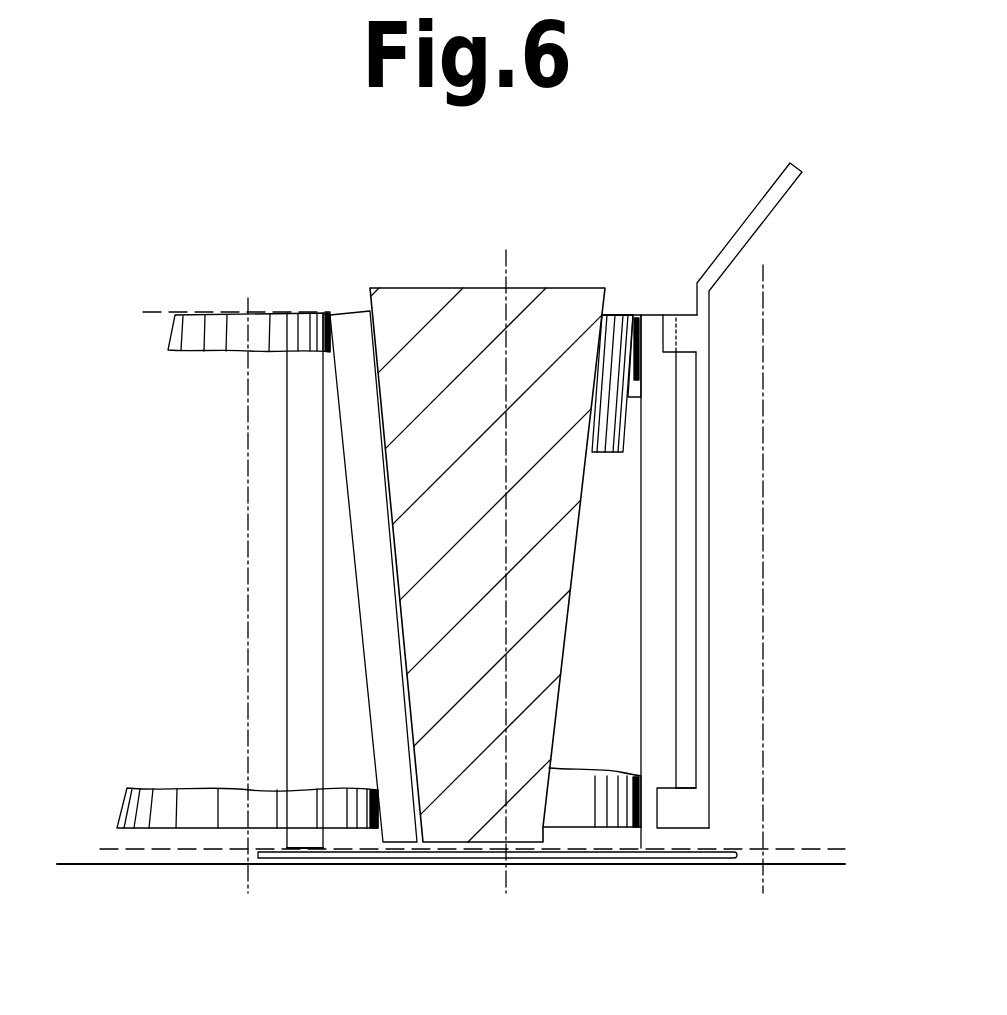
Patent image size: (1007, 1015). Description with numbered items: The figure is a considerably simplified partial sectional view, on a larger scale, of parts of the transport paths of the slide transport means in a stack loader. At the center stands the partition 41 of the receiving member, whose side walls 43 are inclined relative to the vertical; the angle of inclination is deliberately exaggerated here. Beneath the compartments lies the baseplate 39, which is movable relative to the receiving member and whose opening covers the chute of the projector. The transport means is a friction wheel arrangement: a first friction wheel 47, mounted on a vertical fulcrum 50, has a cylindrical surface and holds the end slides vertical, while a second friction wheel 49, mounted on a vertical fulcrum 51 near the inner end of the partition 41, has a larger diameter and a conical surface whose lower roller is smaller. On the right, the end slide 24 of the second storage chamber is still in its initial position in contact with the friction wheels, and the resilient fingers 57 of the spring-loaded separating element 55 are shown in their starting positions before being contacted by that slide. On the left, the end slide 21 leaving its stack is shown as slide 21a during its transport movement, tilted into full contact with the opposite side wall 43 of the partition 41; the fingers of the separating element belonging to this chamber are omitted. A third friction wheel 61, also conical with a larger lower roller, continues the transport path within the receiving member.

The partition 41 is at (468, 300).
The side walls 43 is at (367, 294).
The first friction wheel 47 is at (630, 385).
The second friction wheel 49 is at (620, 317).
The vertical fulcrum 50 is at (520, 298).
The vertical fulcrum 51 is at (527, 556).
The separating element 55 is at (767, 203).
The resilient fingers 57 is at (668, 330).
The third friction wheel 61 is at (235, 330).
The end slide 21 is at (307, 665).
The slide performing the transport movement 21a is at (390, 752).
The end slide 24 is at (617, 664).
The baseplate 39 is at (365, 863).